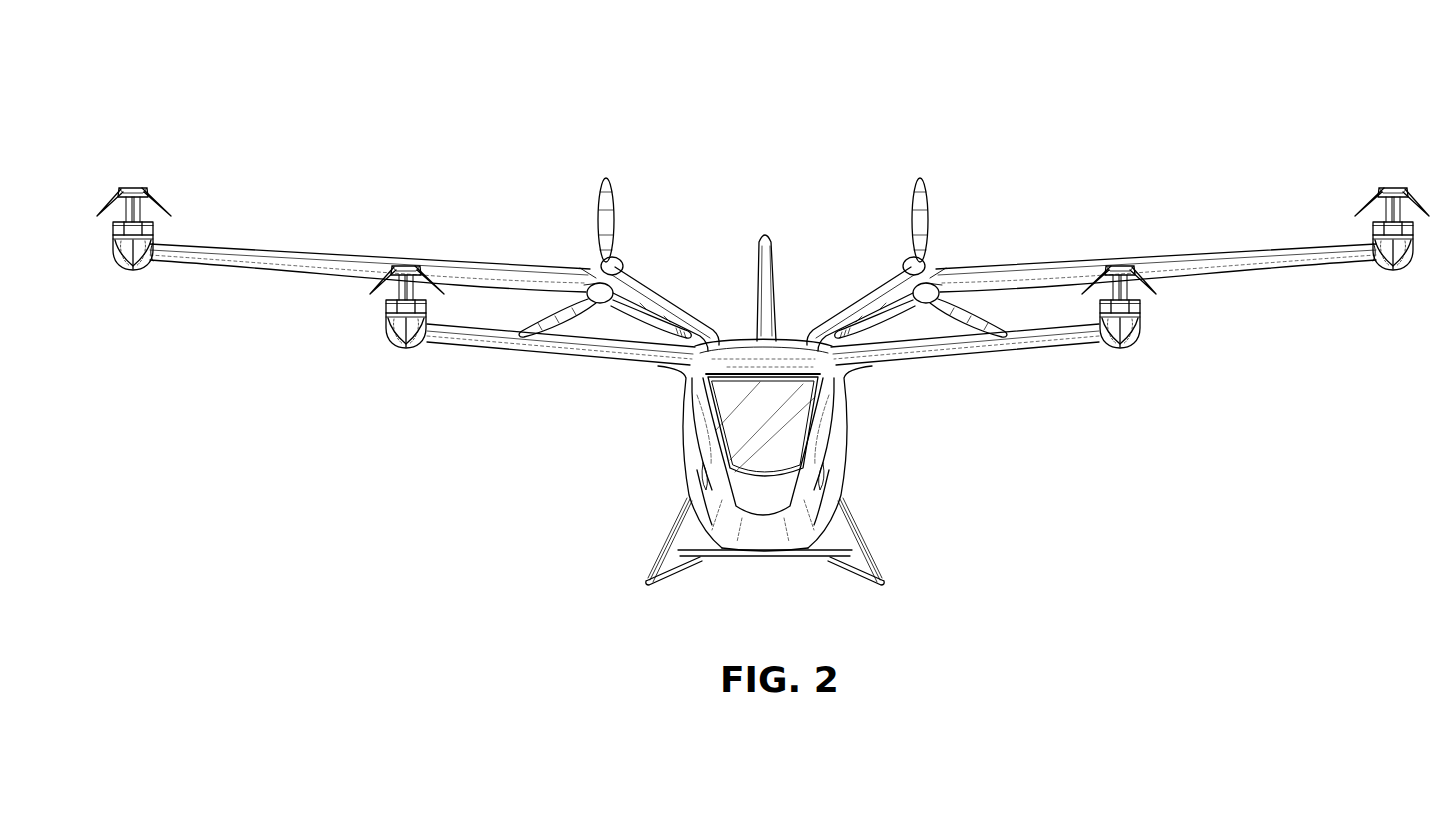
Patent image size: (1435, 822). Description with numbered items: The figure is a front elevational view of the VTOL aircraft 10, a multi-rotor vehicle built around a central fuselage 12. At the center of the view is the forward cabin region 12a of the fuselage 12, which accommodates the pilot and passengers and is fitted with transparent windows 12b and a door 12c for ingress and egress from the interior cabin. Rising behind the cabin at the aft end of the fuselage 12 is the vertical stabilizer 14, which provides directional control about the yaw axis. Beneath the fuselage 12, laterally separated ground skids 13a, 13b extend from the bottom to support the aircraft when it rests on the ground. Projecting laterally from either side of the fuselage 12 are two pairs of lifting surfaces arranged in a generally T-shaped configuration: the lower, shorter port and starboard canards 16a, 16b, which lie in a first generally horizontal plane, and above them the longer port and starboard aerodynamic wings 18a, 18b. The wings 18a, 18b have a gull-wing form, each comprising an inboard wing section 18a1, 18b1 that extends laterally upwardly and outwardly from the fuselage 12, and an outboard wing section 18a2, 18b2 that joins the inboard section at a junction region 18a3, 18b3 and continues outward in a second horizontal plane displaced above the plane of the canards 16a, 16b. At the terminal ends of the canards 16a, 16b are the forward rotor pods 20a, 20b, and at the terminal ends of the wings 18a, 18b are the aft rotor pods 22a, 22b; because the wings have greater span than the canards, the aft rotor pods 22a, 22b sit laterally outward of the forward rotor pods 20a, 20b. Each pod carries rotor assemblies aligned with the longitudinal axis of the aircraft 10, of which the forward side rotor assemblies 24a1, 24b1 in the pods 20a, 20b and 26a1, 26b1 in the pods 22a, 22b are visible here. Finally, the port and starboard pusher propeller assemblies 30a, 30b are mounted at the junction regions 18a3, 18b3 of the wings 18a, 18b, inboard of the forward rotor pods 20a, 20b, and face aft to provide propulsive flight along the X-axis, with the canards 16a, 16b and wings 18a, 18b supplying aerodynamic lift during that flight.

The VTOL aircraft 10 is at (762, 118).
The fuselage 12 is at (763, 439).
The forward cabin region 12a is at (733, 527).
The transparent windows 12b is at (687, 443).
The door 12c is at (684, 482).
The ground skid 13a is at (878, 586).
The ground skid 13b is at (680, 588).
The vertical stabilizer 14 is at (770, 256).
The port canard 16a is at (1020, 346).
The starboard canard 16b is at (555, 350).
The port aerodynamic wing 18a is at (1083, 262).
The inboard wing section 18a1 is at (860, 300).
The outboard wing section 18a2 is at (1204, 258).
The junction region 18a3 is at (886, 229).
The starboard aerodynamic wing 18b is at (456, 262).
The inboard wing section 18b1 is at (665, 297).
The outboard wing section 18b2 is at (312, 257).
The junction region 18b3 is at (596, 262).
The forward rotor pod 20a is at (1122, 345).
The forward rotor pod 20b is at (406, 345).
The aft rotor pod 22a is at (1397, 272).
The aft rotor pod 22b is at (125, 255).
The side rotor assembly 24a1 is at (1150, 300).
The side rotor assembly 24b1 is at (378, 302).
The side rotor assembly 26a1 is at (1360, 197).
The side rotor assembly 26b1 is at (168, 193).
The port pusher propeller assembly 30a is at (919, 265).
The starboard pusher propeller assembly 30b is at (621, 265).